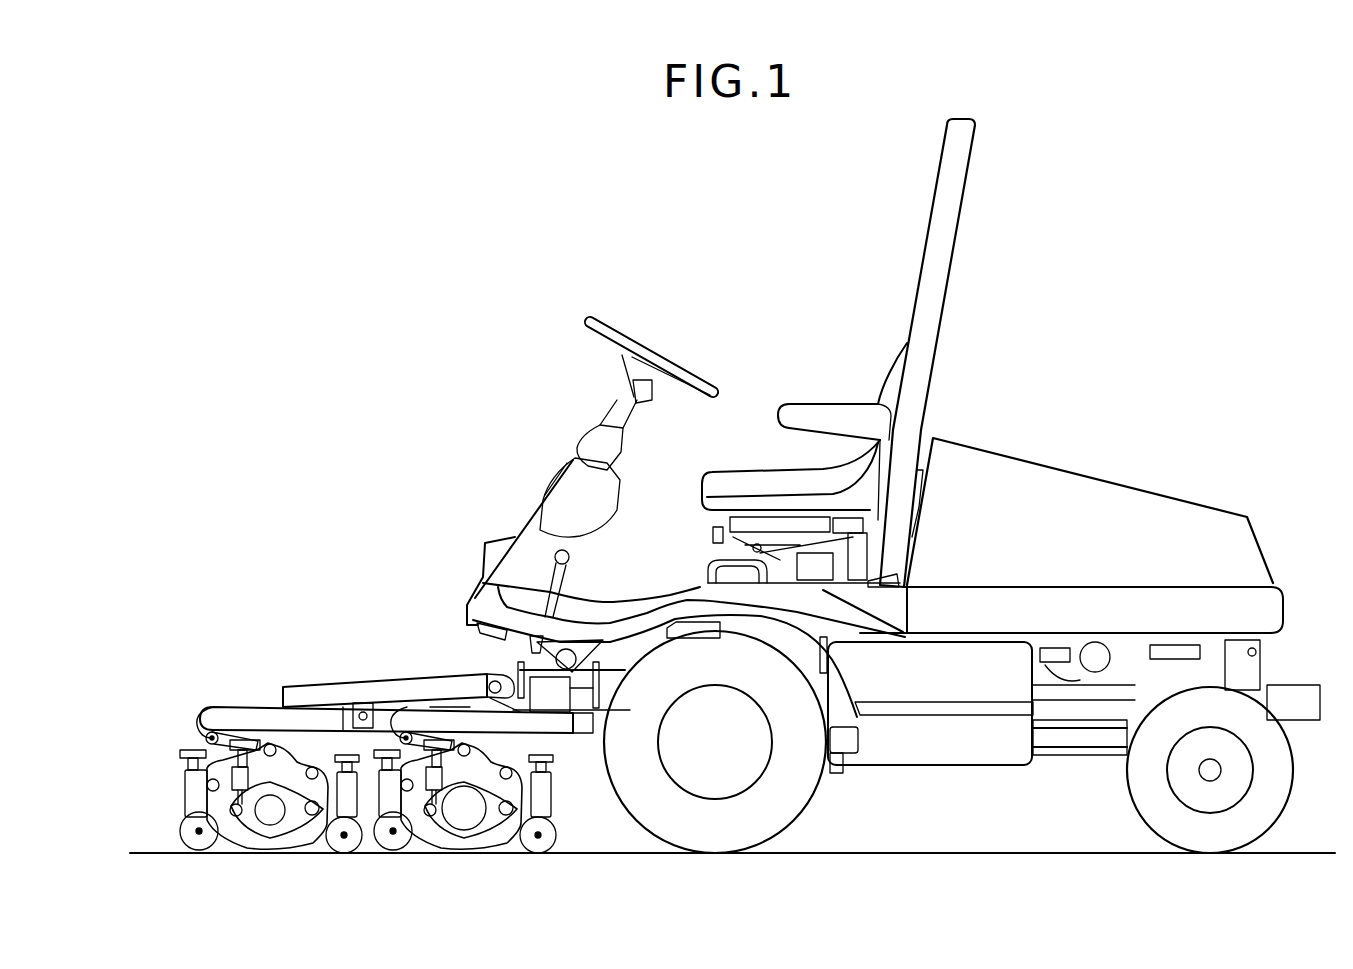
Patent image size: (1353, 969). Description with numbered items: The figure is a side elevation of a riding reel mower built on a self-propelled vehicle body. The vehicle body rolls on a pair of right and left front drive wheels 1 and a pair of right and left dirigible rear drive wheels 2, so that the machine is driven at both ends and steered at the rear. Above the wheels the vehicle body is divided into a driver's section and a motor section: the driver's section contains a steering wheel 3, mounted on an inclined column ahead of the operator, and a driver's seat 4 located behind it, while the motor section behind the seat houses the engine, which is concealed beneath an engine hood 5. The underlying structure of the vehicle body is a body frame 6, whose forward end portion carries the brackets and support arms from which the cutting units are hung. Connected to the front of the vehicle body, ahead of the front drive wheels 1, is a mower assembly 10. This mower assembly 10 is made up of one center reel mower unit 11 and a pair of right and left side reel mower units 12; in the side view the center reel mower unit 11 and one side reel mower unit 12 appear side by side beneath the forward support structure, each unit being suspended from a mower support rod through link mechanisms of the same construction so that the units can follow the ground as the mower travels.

The front drive wheels 1 is at (720, 855).
The rear drive wheels 2 is at (1227, 846).
The steering wheel 3 is at (640, 340).
The driver's seat 4 is at (748, 476).
The engine hood 5 is at (1079, 472).
The body frame 6 is at (1103, 717).
The mower assembly 10 is at (270, 680).
The center reel mower unit 11 is at (308, 836).
The side reel mower units 12 is at (497, 840).